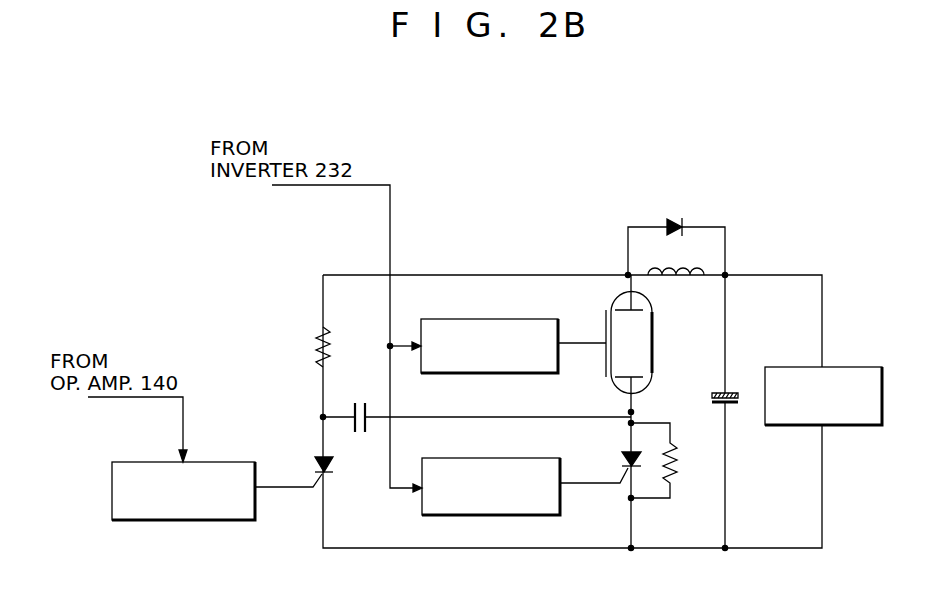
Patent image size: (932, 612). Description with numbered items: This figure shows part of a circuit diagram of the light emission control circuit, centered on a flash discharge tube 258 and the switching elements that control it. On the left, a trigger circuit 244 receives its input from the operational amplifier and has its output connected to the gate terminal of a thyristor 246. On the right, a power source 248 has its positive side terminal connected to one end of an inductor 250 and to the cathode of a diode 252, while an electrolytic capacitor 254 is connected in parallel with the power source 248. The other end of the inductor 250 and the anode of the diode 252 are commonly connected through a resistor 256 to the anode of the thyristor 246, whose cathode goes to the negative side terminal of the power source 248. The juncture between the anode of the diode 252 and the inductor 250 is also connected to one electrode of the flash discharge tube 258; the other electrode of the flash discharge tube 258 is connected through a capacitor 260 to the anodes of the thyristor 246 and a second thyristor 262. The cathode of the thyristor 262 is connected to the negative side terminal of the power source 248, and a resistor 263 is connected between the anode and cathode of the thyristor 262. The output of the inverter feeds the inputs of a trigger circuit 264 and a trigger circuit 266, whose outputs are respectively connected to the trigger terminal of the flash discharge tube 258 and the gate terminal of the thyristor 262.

The trigger circuit 244 is at (132, 514).
The thyristor 246 is at (333, 462).
The power source 248 is at (867, 367).
The inductor 250 is at (678, 280).
The diode 252 is at (677, 218).
The electrolytic capacitor 254 is at (707, 400).
The resistor 256 is at (335, 347).
The flash discharge tube 258 is at (652, 343).
The capacitor 260 is at (363, 396).
The thyristor 262 is at (622, 455).
The resistor 263 is at (678, 463).
The trigger circuit 264 is at (532, 320).
The trigger circuit 266 is at (548, 466).